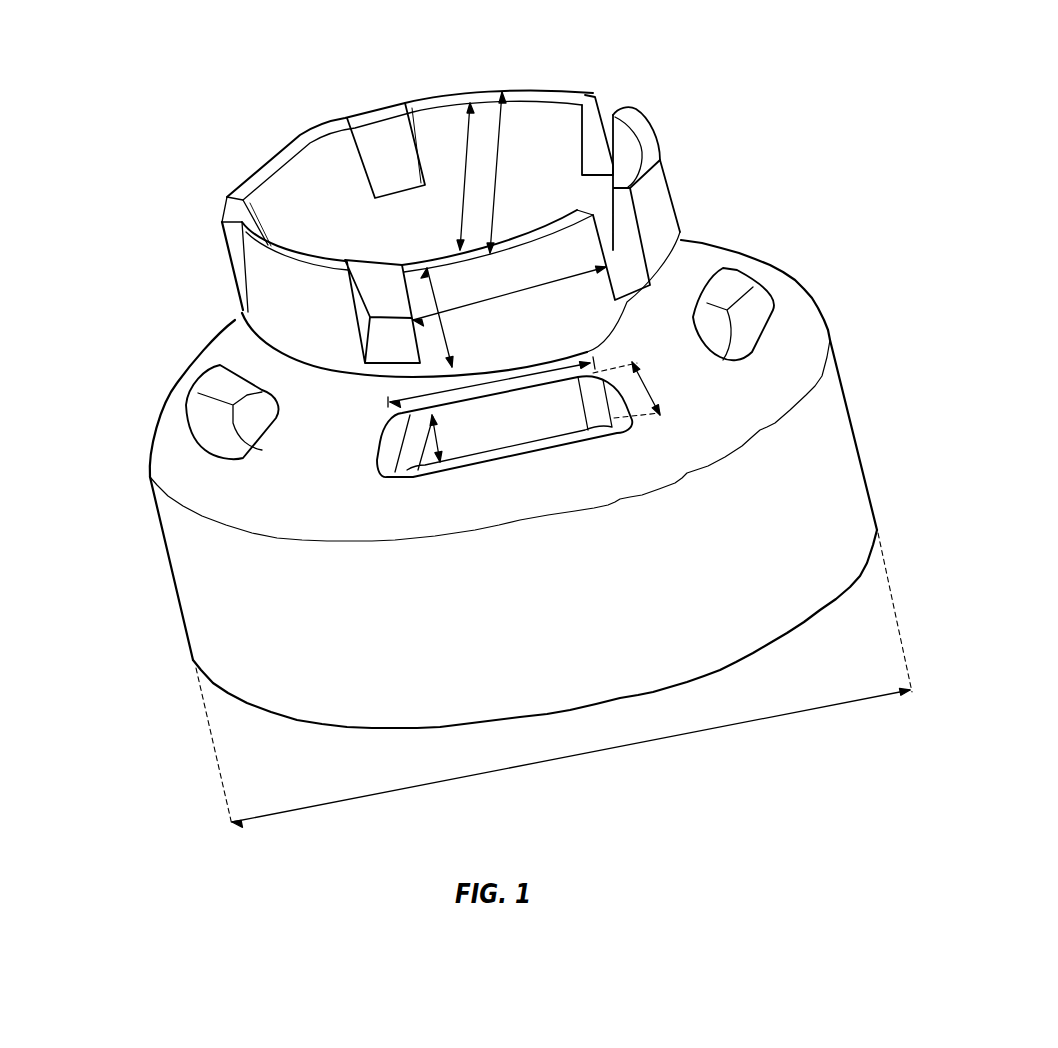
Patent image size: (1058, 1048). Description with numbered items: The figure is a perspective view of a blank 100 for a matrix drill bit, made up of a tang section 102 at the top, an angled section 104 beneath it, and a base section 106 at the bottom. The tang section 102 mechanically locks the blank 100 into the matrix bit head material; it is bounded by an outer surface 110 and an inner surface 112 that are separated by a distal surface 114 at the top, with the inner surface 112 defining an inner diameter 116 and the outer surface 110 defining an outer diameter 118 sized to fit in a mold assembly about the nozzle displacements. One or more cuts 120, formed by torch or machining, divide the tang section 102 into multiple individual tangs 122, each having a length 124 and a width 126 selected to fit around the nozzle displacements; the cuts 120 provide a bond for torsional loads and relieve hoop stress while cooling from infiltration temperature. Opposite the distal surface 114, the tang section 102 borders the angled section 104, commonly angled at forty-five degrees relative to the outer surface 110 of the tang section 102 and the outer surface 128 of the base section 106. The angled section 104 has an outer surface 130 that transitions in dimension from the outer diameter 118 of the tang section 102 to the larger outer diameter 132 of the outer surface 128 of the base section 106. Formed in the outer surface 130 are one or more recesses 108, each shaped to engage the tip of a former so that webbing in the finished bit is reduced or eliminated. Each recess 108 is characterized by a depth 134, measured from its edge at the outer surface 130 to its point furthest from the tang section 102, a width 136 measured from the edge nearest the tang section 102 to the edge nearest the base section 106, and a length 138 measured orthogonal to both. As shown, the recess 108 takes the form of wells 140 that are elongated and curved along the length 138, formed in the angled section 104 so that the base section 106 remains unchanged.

The blank 100 is at (134, 51).
The tang section 102 is at (236, 318).
The angled section 104 is at (210, 327).
The base section 106 is at (135, 473).
The recess 108 is at (360, 456).
The outer surface 110 is at (302, 308).
The inner surface 112 is at (335, 182).
The distal surface 114 is at (291, 147).
The inner diameter 116 is at (465, 190).
The outer diameter 118 is at (500, 140).
The cut 120 is at (415, 155).
The tang 122 is at (418, 100).
The length 124 is at (440, 323).
The width 126 is at (563, 285).
The outer surface 128 is at (570, 659).
The outer surface 130 is at (522, 508).
The outer diameter 132 is at (635, 745).
The depth 134 is at (445, 452).
The width 136 is at (656, 398).
The length 138 is at (587, 365).
The well 140 is at (794, 309).